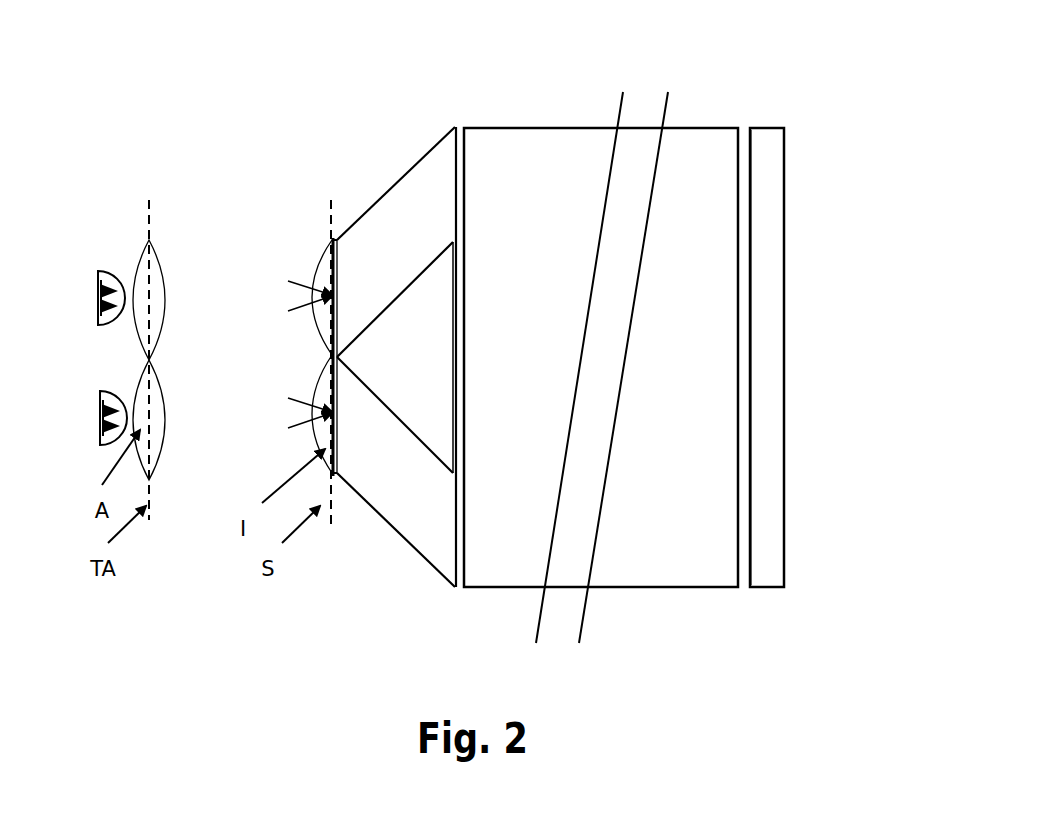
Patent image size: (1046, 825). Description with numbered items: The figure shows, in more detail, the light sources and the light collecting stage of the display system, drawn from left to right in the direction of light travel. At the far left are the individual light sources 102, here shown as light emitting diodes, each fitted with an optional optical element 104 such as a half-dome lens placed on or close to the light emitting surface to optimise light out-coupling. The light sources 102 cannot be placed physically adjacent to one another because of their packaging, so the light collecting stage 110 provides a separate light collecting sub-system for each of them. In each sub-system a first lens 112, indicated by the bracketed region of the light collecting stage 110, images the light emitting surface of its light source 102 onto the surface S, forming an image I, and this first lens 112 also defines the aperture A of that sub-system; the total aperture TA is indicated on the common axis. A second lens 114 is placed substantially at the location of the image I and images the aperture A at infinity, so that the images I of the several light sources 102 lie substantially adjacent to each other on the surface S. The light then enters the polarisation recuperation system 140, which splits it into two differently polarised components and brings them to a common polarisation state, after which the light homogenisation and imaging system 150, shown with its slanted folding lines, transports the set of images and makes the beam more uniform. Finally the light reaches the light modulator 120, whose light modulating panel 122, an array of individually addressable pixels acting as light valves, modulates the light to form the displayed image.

The light source 102 is at (114, 314).
The optical element 104 is at (96, 288).
The light collecting stage 110 is at (340, 208).
The first lens 112 is at (160, 288).
The second lens 114 is at (315, 265).
The light modulator 120 is at (803, 126).
The light modulating panel 122 is at (760, 542).
The polarisation recuperation system 140 is at (340, 92).
The light homogenisation and imaging system 150 is at (740, 92).